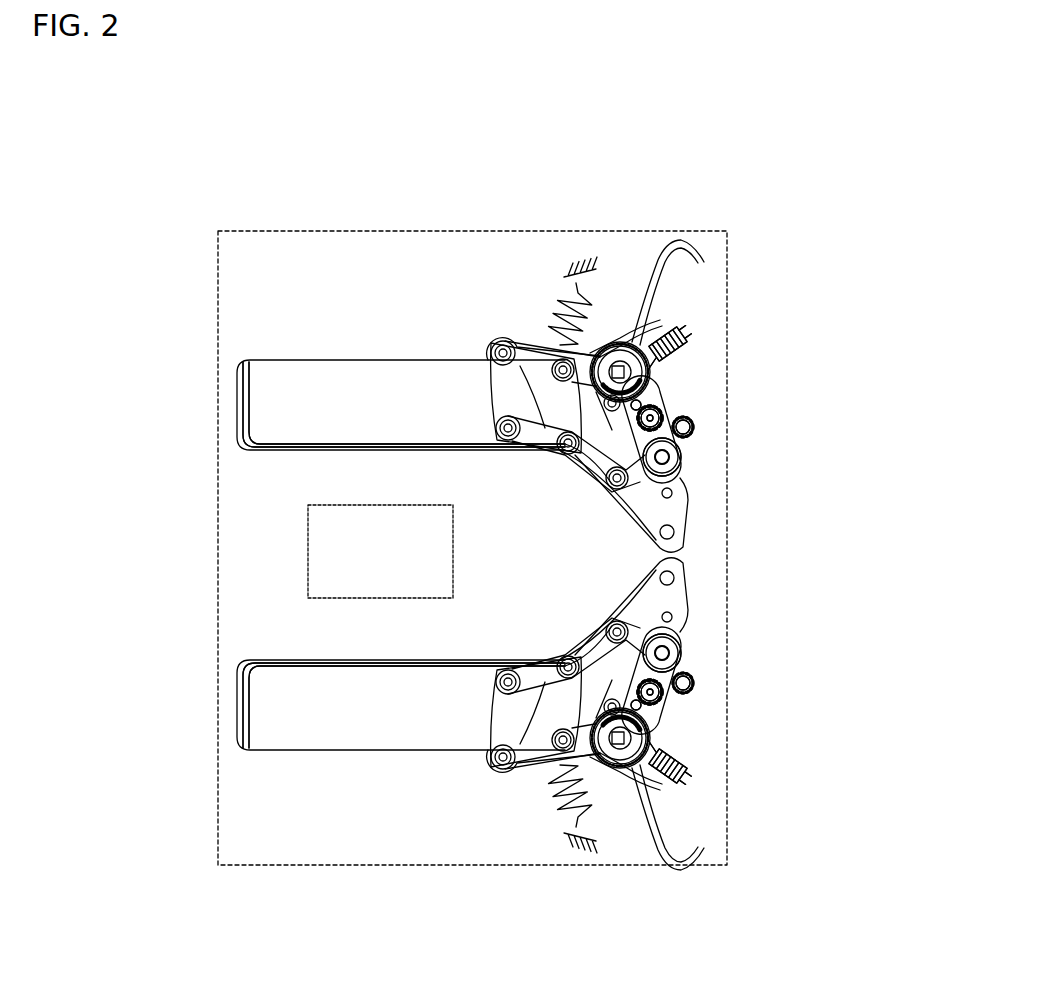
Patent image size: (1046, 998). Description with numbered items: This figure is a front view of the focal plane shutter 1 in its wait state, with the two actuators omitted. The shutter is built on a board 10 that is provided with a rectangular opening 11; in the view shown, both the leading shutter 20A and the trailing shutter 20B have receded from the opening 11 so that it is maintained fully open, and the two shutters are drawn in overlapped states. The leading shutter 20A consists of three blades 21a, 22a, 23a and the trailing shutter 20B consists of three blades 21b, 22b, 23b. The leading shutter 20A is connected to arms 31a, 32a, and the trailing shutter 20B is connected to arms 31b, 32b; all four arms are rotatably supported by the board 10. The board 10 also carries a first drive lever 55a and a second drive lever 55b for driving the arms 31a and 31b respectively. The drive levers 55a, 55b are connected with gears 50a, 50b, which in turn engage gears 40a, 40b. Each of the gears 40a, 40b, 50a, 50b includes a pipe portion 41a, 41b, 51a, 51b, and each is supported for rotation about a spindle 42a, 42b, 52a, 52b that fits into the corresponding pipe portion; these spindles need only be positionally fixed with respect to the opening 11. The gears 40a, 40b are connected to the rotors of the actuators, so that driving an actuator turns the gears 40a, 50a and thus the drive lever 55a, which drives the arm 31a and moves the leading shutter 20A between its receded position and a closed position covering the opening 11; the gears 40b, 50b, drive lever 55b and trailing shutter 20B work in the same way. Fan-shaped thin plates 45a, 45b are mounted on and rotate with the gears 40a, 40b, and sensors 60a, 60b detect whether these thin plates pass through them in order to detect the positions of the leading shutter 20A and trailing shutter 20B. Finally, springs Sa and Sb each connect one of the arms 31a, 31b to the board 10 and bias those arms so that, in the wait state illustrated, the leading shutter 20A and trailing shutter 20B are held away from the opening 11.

The focal plane shutter 1 is at (553, 183).
The board 10 is at (228, 230).
The opening 11 is at (330, 505).
The leading shutter 20A is at (432, 754).
The trailing shutter 20B is at (437, 358).
The blade 21a is at (335, 720).
The blade 22a is at (404, 705).
The blade 23a is at (407, 707).
The blade 21b is at (323, 368).
The blade 22b is at (404, 404).
The blade 23b is at (407, 403).
The arm 31a is at (522, 760).
The arm 31b is at (537, 352).
The arm 32a is at (688, 605).
The arm 32b is at (688, 505).
The gear 40a is at (692, 744).
The gear 40b is at (692, 366).
The pipe portion 41a is at (622, 766).
The pipe portion 41b is at (621, 346).
The spindle 42a is at (704, 848).
The spindle 42b is at (704, 262).
The thin plate 45a is at (660, 790).
The thin plate 45b is at (660, 320).
The gear 50a is at (684, 674).
The gear 50b is at (684, 436).
The pipe portion 51a is at (672, 654).
The pipe portion 51b is at (672, 456).
The spindle 52a is at (684, 642).
The spindle 52b is at (684, 468).
The first drive lever 55a is at (662, 692).
The second drive lever 55b is at (662, 418).
The sensor 60a is at (684, 766).
The sensor 60b is at (682, 344).
The spring Sa is at (588, 806).
The spring Sb is at (587, 305).